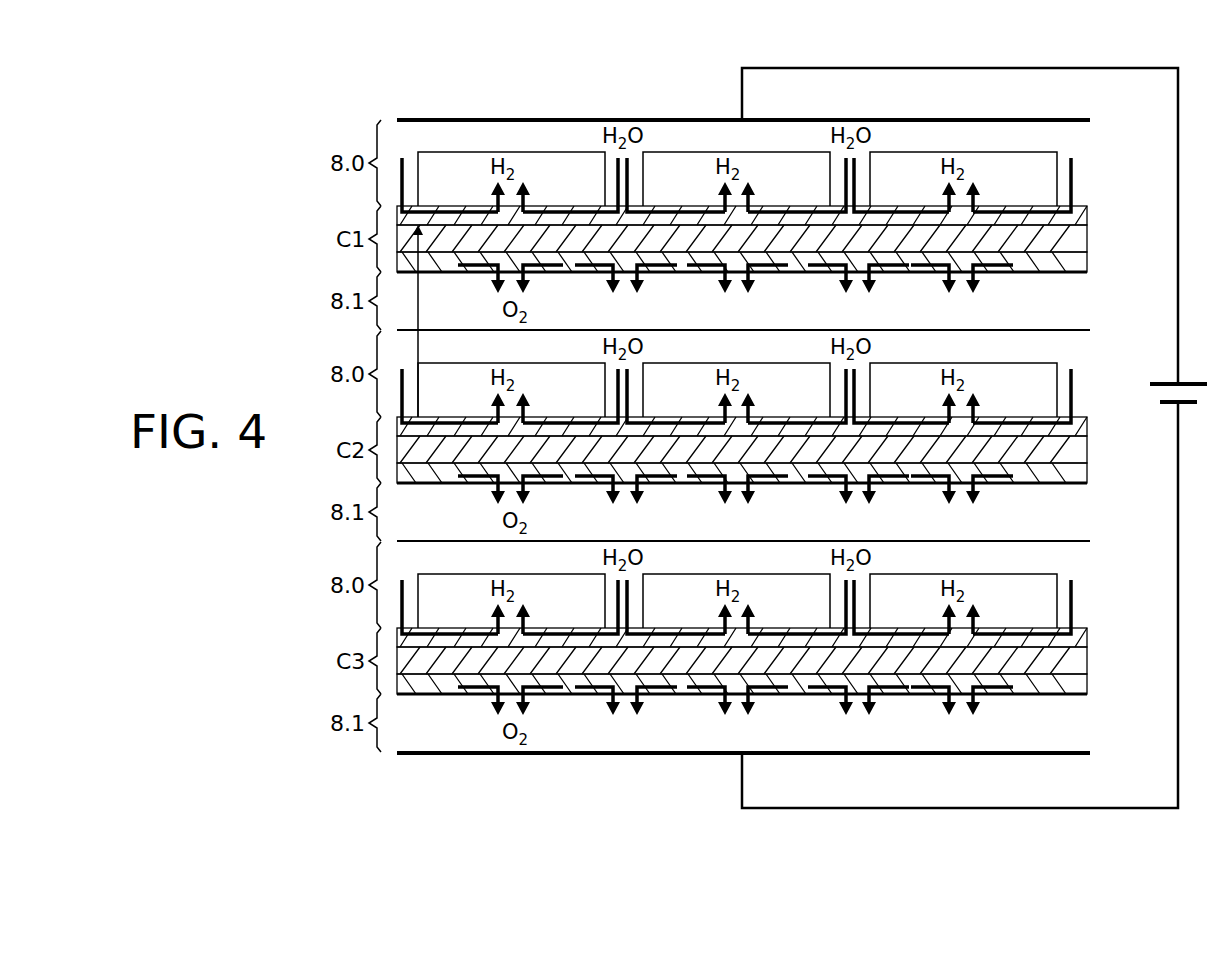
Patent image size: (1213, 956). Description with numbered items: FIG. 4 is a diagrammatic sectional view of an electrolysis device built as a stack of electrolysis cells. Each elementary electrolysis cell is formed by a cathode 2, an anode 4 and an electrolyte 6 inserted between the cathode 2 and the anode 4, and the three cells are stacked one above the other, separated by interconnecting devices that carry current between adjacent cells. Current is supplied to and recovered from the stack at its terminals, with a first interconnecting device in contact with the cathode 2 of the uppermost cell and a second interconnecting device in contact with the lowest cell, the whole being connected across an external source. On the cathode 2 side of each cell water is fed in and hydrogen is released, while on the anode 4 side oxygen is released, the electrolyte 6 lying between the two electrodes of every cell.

The cathode 2 is at (1087, 214).
The electrolyte 6 is at (1087, 241).
The anode 4 is at (1087, 266).